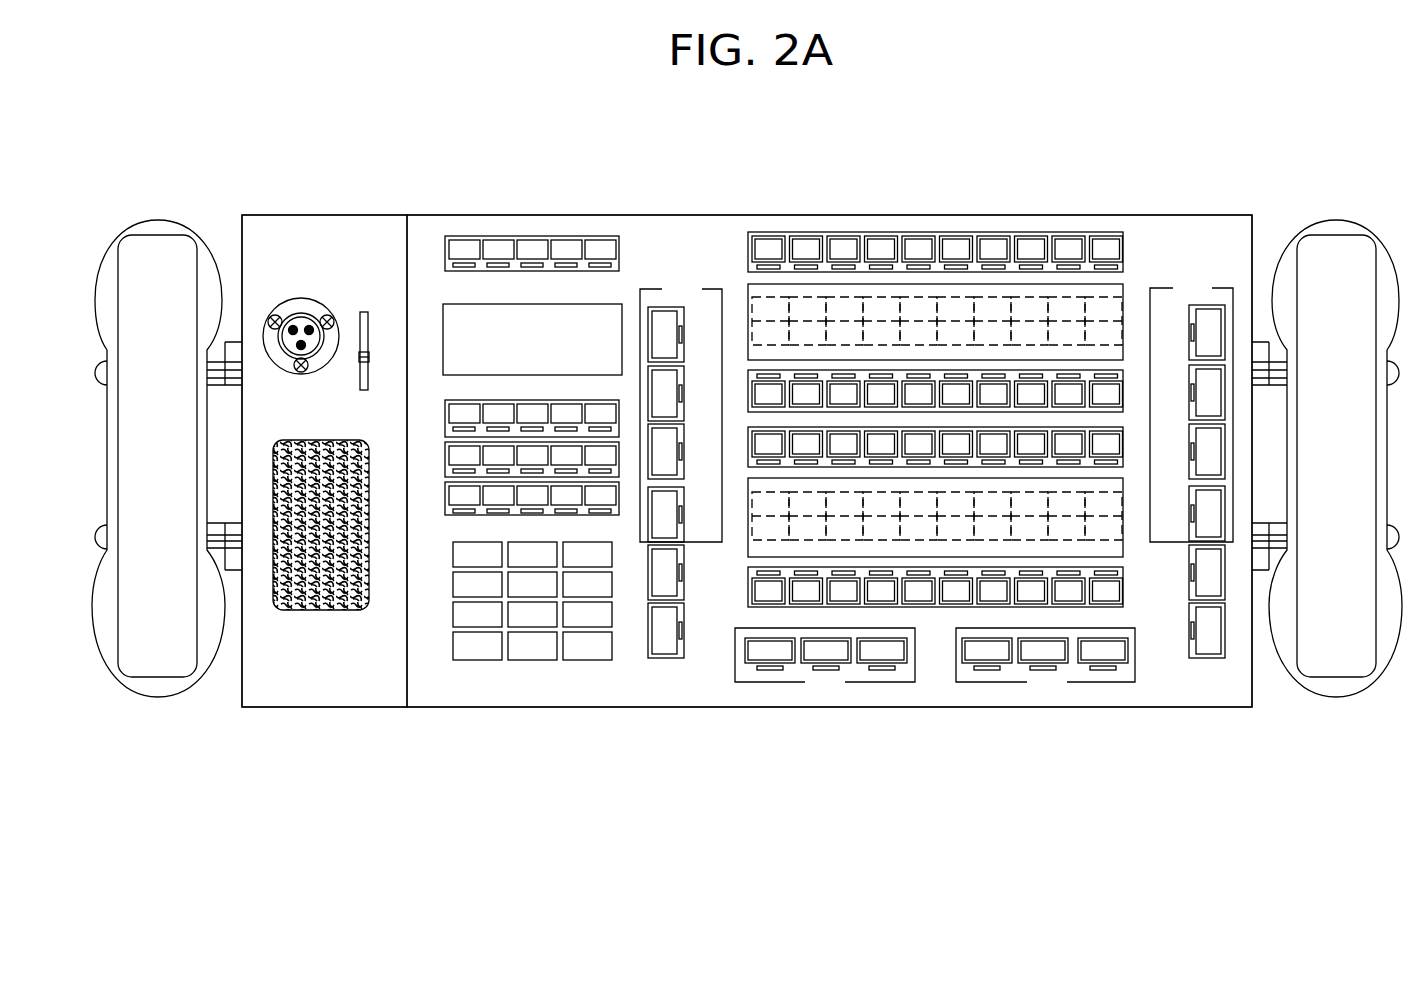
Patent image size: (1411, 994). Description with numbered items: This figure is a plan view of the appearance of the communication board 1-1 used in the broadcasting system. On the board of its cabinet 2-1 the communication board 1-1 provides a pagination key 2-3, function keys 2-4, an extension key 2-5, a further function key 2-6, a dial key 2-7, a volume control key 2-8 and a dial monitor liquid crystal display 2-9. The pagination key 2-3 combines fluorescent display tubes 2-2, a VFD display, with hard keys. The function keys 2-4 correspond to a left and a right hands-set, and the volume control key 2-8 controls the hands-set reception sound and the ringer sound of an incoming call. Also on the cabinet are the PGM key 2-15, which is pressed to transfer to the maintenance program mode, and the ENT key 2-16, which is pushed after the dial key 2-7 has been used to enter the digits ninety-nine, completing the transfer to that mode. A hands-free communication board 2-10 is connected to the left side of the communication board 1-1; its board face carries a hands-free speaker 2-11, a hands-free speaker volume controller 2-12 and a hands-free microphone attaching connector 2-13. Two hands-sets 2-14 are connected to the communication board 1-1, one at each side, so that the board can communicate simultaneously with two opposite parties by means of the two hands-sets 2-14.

The communication board 1-1 is at (1091, 205).
The cabinet 2-1 is at (1150, 215).
The fluorescent display tubes 2-2 is at (1118, 301).
The pagination key 2-3 is at (767, 250).
The function keys 2-4 is at (750, 650).
The extension key 2-5 is at (576, 500).
The function key 2-6 is at (450, 460).
The dial key 2-7 is at (518, 583).
The volume control key 2-8 is at (486, 244).
The dial monitor liquid crystal (LCD) 2-9 is at (563, 310).
The hands-free communication board 2-10 is at (276, 215).
The hands-free speaker 2-11 is at (325, 610).
The hands-free speaker volume controller 2-12 is at (364, 311).
The hands-free microphone attaching connector 2-13 is at (290, 306).
The hands-sets 2-14 is at (157, 232).
The PGM key 2-15 is at (567, 412).
The ENT key 2-16 is at (628, 398).